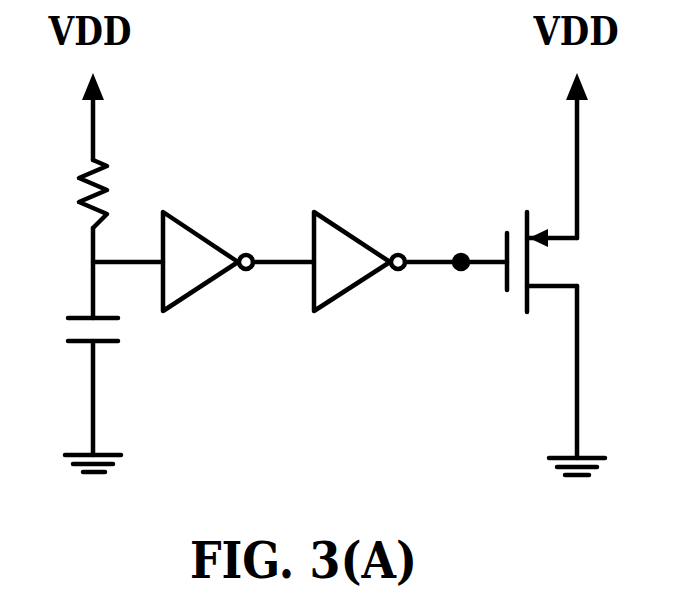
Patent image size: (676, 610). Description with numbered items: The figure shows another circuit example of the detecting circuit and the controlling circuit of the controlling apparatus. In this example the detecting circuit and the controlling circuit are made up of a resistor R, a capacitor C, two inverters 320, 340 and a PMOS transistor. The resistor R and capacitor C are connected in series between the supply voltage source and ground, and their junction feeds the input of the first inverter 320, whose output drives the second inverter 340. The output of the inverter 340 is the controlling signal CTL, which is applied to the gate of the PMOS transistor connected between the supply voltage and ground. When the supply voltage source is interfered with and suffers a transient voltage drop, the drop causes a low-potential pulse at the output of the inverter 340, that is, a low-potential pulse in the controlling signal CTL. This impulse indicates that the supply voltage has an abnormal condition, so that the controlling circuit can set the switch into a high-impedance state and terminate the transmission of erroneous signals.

The inverter 320 is at (200, 287).
The inverter 340 is at (352, 287).
The resistor R is at (66, 194).
The capacitor C is at (68, 334).
The controlling signal CTL is at (456, 238).